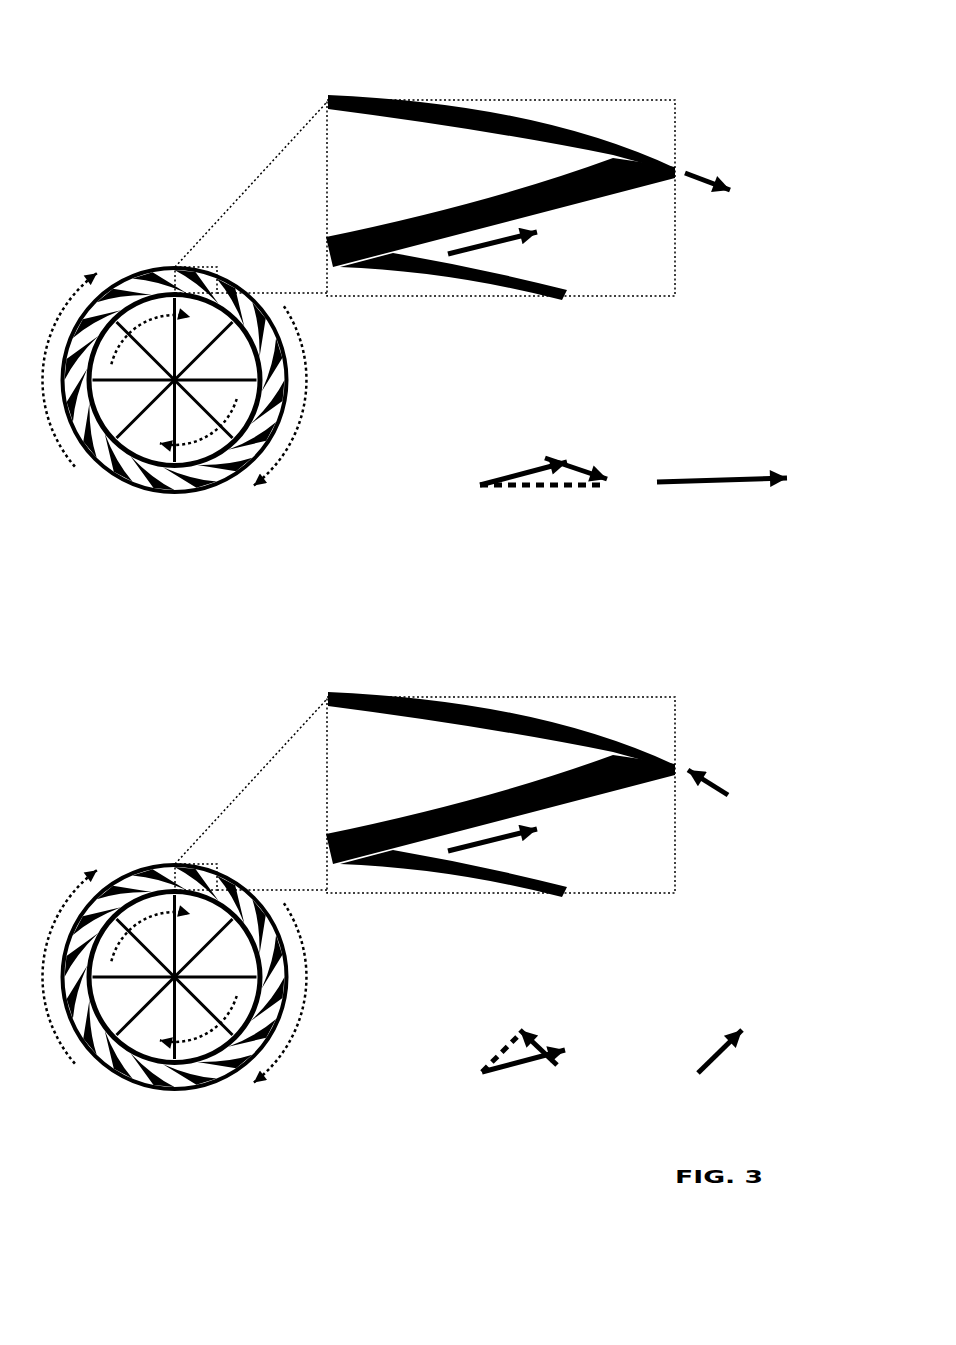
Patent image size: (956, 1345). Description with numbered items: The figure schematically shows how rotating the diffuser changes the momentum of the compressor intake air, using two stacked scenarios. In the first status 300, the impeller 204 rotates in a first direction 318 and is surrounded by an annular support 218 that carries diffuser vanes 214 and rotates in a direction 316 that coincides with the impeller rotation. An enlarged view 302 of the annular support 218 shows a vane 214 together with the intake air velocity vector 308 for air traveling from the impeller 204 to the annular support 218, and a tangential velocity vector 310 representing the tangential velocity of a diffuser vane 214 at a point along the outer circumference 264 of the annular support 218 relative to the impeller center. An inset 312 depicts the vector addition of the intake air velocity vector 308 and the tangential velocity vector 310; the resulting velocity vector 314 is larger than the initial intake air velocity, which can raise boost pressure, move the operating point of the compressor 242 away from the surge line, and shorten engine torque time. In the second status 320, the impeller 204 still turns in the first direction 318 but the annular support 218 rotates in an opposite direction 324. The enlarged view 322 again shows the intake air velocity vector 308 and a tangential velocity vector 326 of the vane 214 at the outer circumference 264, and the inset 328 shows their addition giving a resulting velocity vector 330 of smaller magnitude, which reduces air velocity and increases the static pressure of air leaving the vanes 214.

The impeller 204 is at (140, 440).
The outer circumference 264 is at (177, 492).
The first direction 318 is at (212, 458).
The compressor 242 is at (327, 455).
The vanes 214 is at (610, 157).
The annular support 218 is at (459, 103).
The intake air velocity vector 308 is at (503, 255).
The first status 300 is at (135, 233).
The enlarged view 302 is at (313, 62).
The tangential velocity vector 310 is at (703, 183).
The inset 312 is at (577, 412).
The resulting velocity vector 314 is at (700, 478).
The direction 316 is at (297, 332).
The second status 320 is at (135, 830).
The enlarged view 322 is at (313, 659).
The direction 324 is at (299, 930).
The tangential velocity vector 326 is at (713, 797).
The inset 328 is at (578, 980).
The resulting velocity vector 330 is at (507, 1045).